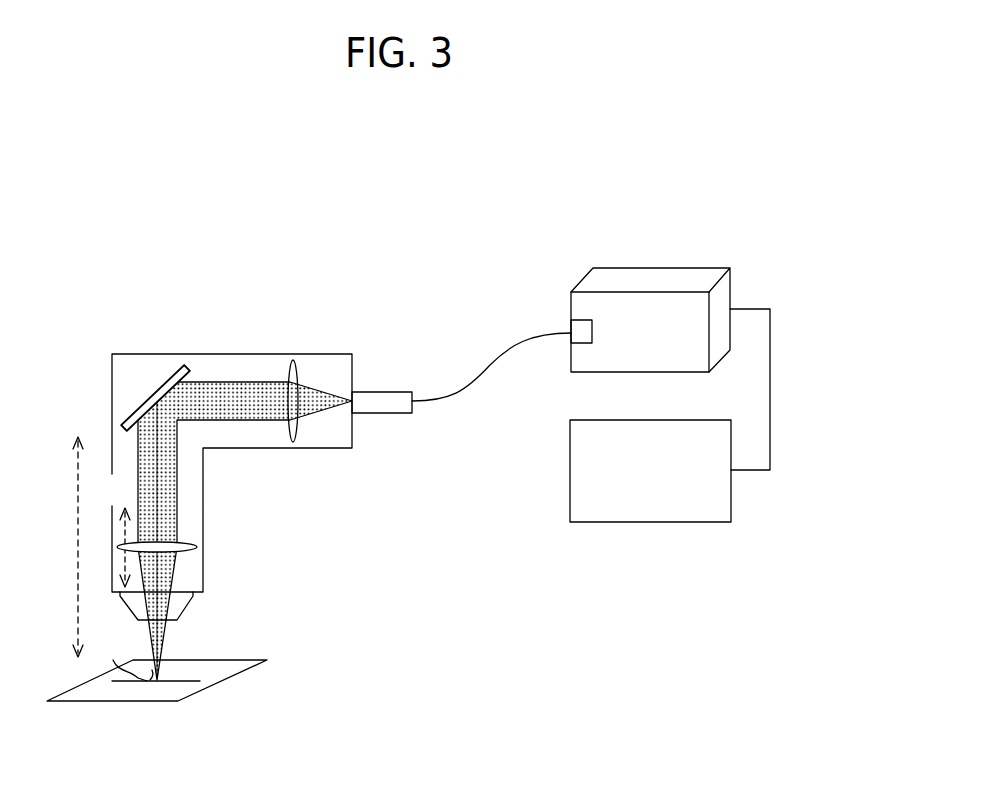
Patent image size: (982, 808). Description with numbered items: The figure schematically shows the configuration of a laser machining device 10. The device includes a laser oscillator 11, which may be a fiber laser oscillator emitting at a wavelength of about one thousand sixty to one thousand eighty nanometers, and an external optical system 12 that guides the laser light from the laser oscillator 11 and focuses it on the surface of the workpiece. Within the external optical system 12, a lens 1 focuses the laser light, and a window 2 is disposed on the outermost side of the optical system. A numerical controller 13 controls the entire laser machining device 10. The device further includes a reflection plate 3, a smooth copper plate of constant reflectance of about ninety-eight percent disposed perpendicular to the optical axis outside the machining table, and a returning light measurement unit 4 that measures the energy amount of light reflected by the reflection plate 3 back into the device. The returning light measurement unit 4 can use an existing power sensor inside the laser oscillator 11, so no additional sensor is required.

The lens 1 is at (186, 541).
The window 2 is at (172, 631).
The reflection plate 3 is at (223, 670).
The returning light measurement unit 4 is at (582, 320).
The laser machining device 10 is at (108, 265).
The laser oscillator 11 is at (682, 267).
The external optical system 12 is at (111, 372).
The numerical controller 13 is at (600, 523).